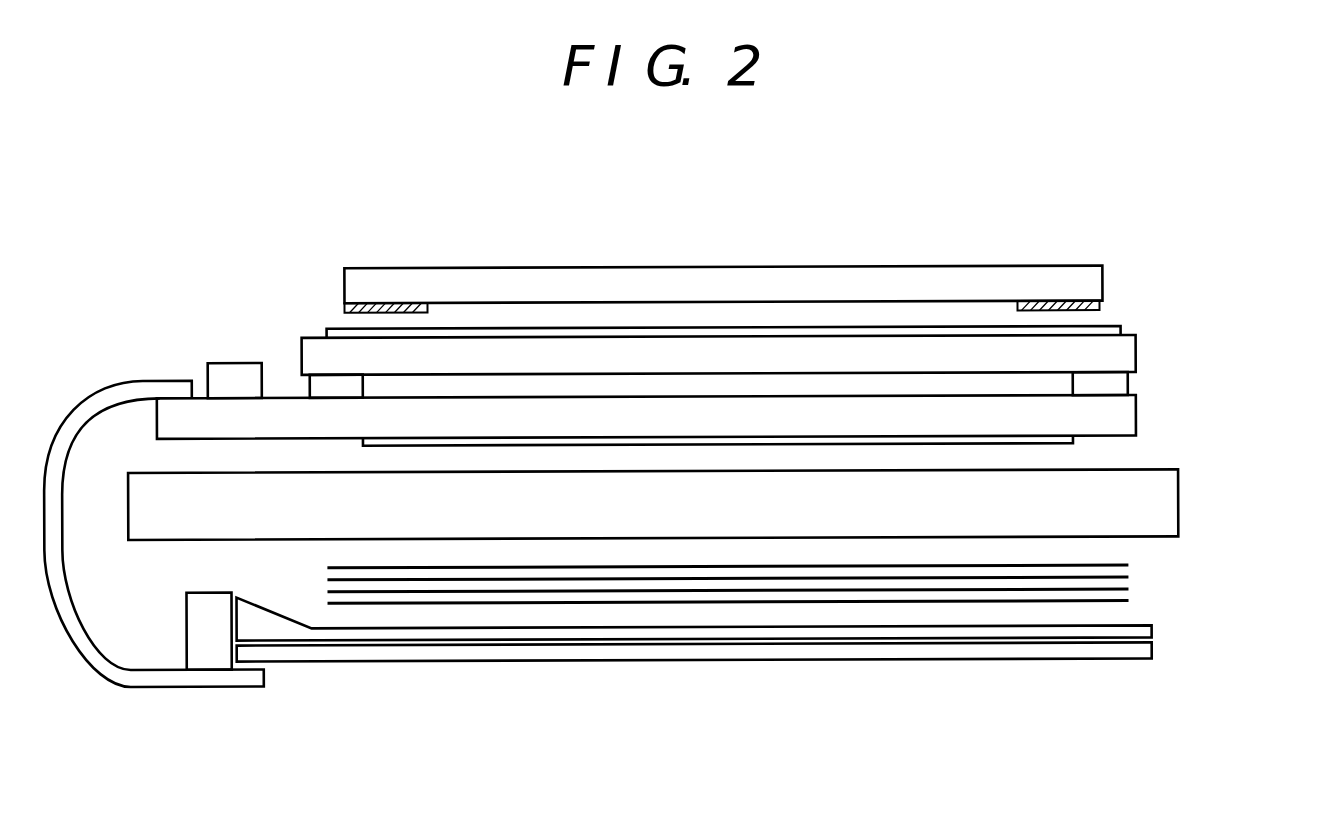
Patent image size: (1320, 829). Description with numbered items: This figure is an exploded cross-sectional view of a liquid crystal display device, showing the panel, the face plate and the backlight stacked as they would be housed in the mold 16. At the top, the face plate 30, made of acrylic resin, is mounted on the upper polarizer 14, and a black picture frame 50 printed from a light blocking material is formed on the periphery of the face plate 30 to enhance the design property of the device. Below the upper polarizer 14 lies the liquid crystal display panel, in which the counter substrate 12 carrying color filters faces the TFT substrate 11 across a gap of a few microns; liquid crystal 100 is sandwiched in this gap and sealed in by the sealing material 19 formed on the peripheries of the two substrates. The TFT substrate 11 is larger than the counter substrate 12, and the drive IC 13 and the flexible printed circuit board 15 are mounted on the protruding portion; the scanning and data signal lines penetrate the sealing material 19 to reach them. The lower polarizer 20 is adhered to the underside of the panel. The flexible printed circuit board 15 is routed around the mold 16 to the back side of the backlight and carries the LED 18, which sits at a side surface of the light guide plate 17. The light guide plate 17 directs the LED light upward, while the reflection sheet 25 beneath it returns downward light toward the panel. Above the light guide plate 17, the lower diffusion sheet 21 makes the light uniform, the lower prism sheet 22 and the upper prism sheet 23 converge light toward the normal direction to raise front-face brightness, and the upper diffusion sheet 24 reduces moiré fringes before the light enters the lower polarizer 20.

The liquid crystal 100 is at (700, 383).
The picture frame 50 is at (382, 301).
The face plate 30 is at (1060, 271).
The upper polarizer 14 is at (1078, 333).
The counter substrate 12 is at (1110, 353).
The sealing material 19 is at (1117, 383).
The TFT substrate 11 is at (1123, 418).
The lower polarizer 20 is at (1075, 444).
The drive IC 13 is at (228, 374).
The flexible printed circuit board 15 is at (78, 420).
The mold 16 is at (142, 497).
The LED 18 is at (195, 612).
The upper diffusion sheet 24 is at (1105, 566).
The upper prism sheet 23 is at (1120, 578).
The lower prism sheet 22 is at (1120, 590).
The lower diffusion sheet 21 is at (1100, 602).
The light guide plate 17 is at (1147, 628).
The reflection sheet 25 is at (1127, 661).